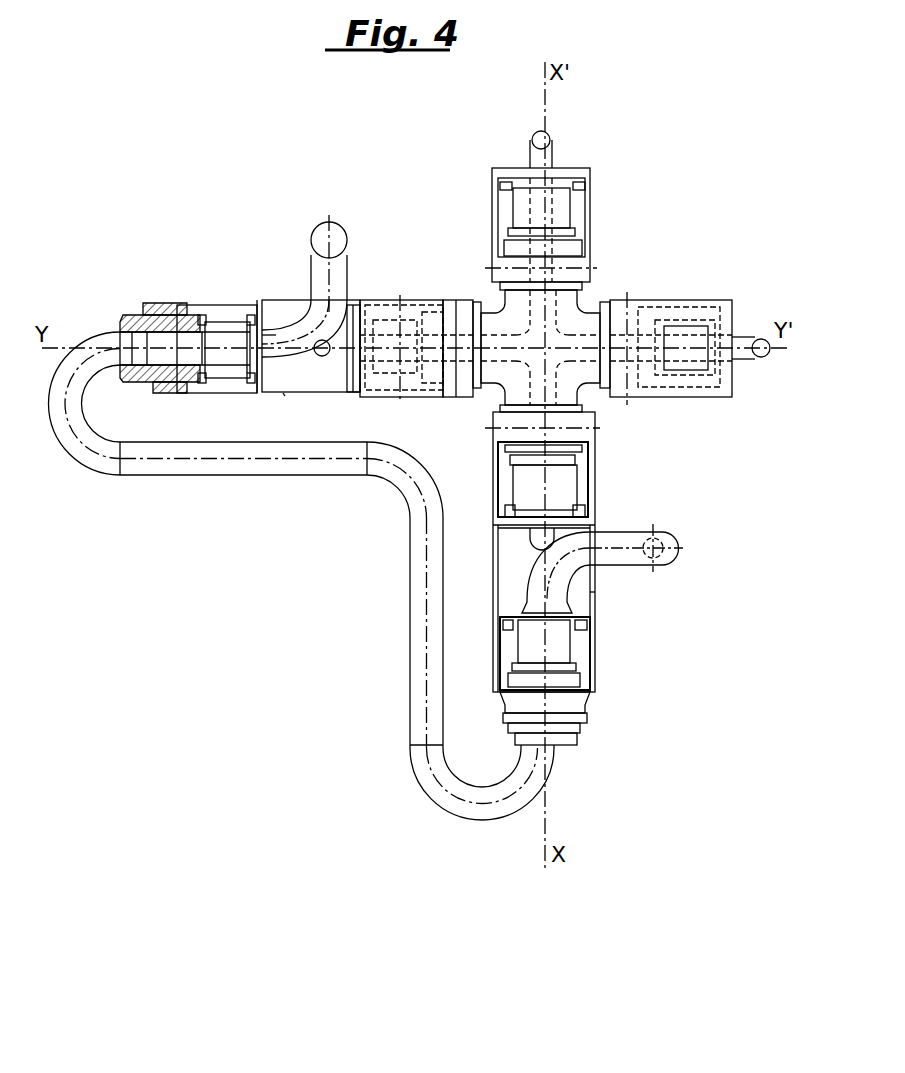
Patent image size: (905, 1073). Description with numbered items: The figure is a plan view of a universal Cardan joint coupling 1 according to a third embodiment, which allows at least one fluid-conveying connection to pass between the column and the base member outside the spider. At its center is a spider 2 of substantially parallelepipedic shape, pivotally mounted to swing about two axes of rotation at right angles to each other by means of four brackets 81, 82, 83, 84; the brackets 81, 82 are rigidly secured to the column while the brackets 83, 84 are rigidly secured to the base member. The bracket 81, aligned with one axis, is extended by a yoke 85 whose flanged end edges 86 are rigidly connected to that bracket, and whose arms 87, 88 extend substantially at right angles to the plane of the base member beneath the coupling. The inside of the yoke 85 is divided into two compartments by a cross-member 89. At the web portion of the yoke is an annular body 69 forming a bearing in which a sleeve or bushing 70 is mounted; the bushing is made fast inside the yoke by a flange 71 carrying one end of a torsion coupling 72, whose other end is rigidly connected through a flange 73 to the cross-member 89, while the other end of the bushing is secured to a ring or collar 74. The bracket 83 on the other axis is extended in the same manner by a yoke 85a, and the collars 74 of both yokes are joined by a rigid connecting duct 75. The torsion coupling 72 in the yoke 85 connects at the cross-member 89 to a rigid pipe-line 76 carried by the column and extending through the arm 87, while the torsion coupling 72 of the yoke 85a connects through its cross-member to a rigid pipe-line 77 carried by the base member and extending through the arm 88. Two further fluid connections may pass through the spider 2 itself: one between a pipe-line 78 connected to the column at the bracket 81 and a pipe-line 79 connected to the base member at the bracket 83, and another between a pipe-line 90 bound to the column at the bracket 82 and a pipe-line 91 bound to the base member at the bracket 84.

The universal Cardan joint coupling 1 is at (603, 409).
The spider 2 is at (523, 330).
The annular body 69 is at (170, 316).
The sleeve or bushing 70 is at (177, 321).
The flange 71 is at (207, 365).
The torsion coupling 72 is at (244, 361).
The flange 73 is at (246, 380).
The ring or collar 74 is at (141, 383).
The rigid connecting duct 75 is at (418, 618).
The rigid duct or pipe-line 76 is at (341, 270).
The rigid duct or pipe-line 77 is at (632, 540).
The duct or pipe-line 78 is at (343, 353).
The duct or pipe-line 79 is at (544, 548).
The bracket 81 is at (448, 296).
The bracket 82 is at (681, 296).
The bracket 83 is at (600, 468).
The bracket 84 is at (596, 224).
The yoke 85 is at (234, 298).
The yoke 85a is at (600, 624).
The flanged end edges 86 is at (362, 373).
The arm 87 is at (292, 300).
The arm 88 is at (284, 396).
The cross-member 89 is at (264, 360).
The duct or pipe-line 90 is at (757, 338).
The duct or pipe-line 91 is at (548, 152).